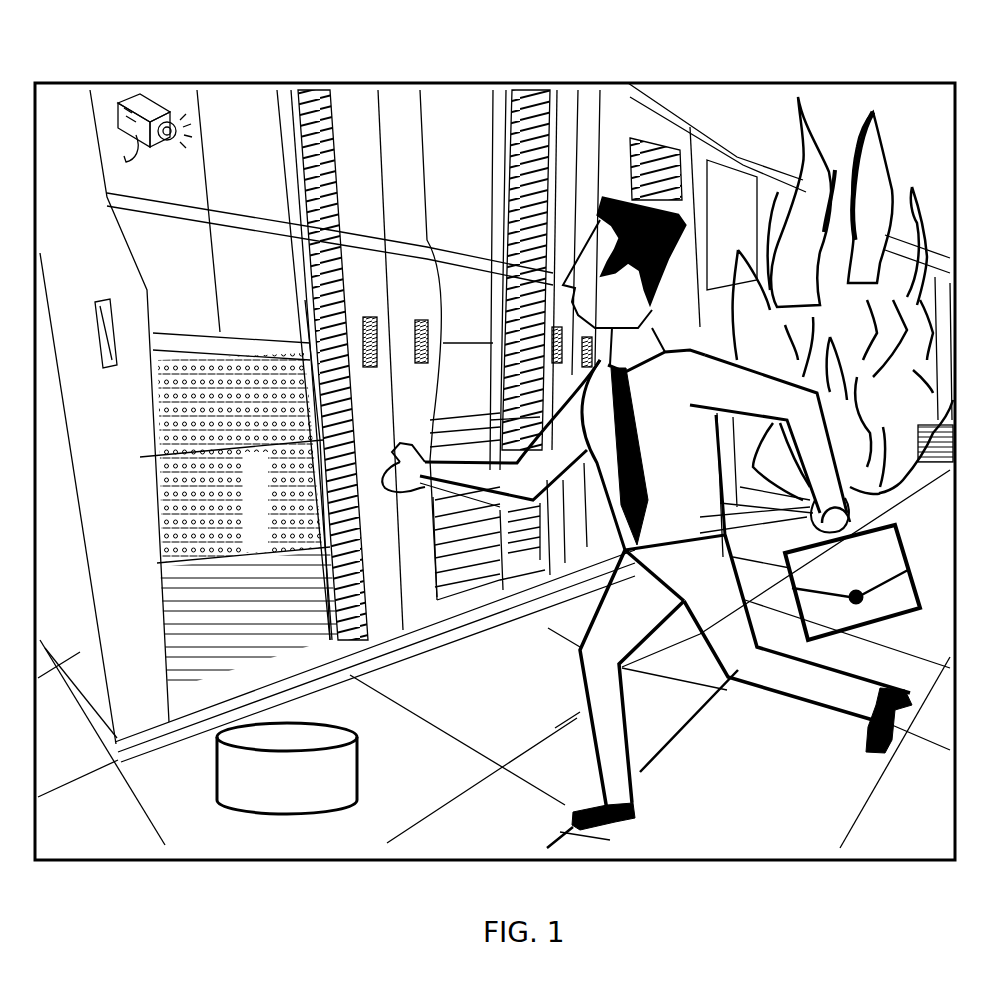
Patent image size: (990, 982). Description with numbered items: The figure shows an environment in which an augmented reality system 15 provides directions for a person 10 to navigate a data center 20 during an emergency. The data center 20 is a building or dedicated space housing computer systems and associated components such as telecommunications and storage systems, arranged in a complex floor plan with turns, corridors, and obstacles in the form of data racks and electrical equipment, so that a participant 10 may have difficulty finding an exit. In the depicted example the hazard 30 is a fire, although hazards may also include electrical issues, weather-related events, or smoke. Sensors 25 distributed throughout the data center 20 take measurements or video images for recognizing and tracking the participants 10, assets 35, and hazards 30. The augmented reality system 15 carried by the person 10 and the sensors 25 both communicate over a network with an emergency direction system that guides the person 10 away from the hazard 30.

The person 10 is at (651, 514).
The augmented reality system 15 is at (576, 258).
The data center 20 is at (456, 105).
The sensors 25 is at (137, 100).
The hazard 30 is at (816, 273).
The assets 35 is at (306, 795).